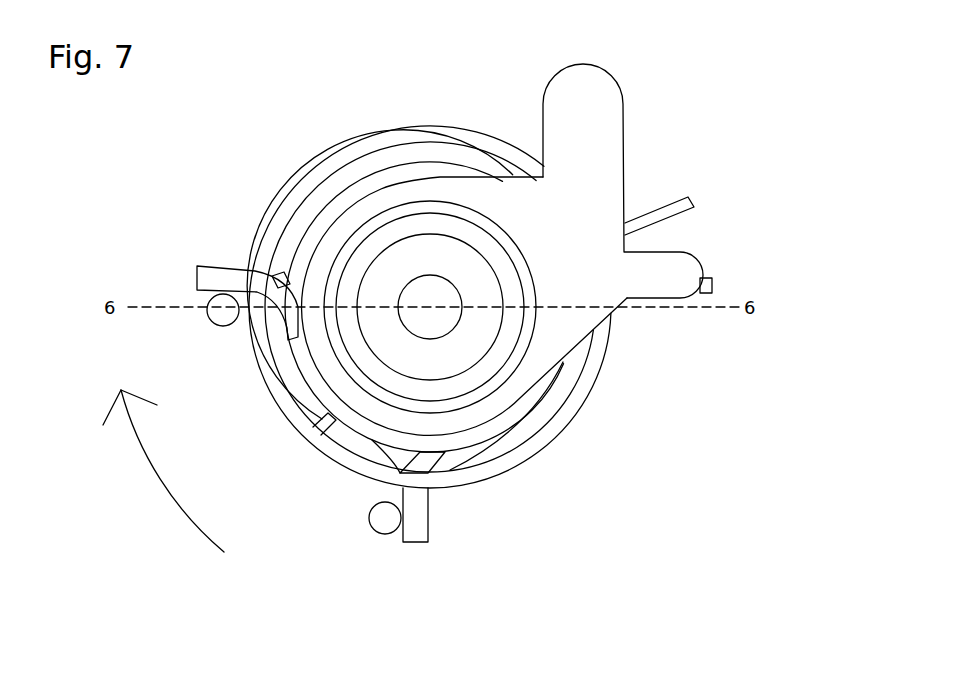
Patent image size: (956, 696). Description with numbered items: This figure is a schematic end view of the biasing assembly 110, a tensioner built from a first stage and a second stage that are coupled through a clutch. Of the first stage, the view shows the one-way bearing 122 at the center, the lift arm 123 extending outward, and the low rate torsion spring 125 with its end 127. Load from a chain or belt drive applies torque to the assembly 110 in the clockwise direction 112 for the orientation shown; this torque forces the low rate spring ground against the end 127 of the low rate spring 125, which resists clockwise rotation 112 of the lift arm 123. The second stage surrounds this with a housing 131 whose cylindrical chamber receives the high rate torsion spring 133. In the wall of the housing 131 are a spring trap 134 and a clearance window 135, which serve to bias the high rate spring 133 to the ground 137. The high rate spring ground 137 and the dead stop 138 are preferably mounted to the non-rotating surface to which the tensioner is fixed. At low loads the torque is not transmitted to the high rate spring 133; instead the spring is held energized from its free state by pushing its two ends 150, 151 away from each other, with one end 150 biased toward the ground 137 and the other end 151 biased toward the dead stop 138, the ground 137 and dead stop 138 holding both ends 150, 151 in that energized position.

The assembly 110 is at (740, 68).
The clockwise direction 112 is at (163, 471).
The one-way bearing 122 is at (445, 230).
The lift arm 123 is at (598, 170).
The low rate torsion spring 125 is at (590, 380).
The end of the low rate spring 127 is at (713, 288).
The housing 131 is at (366, 172).
The high rate torsion spring 133 is at (450, 442).
The spring trap 134 is at (279, 280).
The clearance window 135 is at (322, 443).
The high rate spring ground 137 is at (385, 518).
The dead stop 138 is at (223, 318).
The end of the high rate spring 150 is at (420, 525).
The end of the high rate spring 151 is at (215, 280).